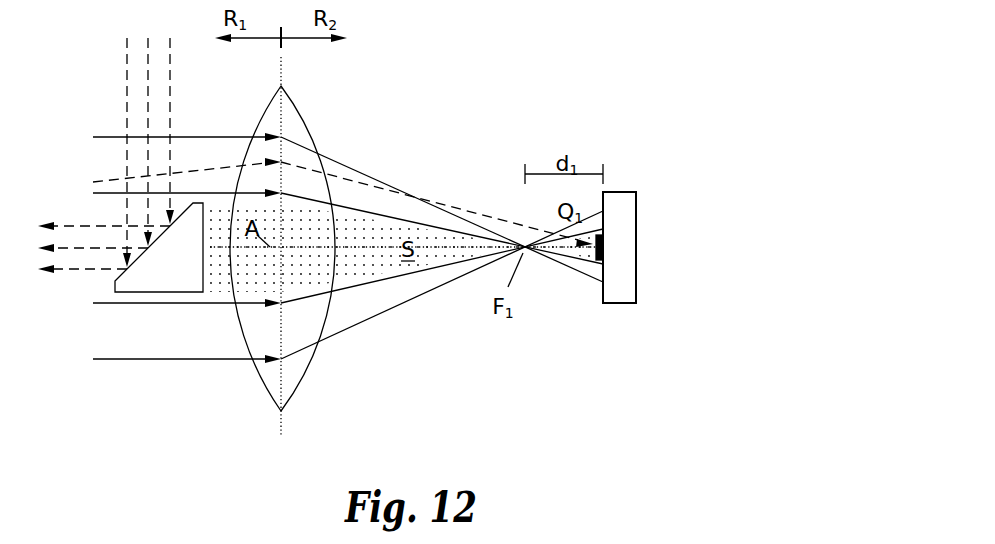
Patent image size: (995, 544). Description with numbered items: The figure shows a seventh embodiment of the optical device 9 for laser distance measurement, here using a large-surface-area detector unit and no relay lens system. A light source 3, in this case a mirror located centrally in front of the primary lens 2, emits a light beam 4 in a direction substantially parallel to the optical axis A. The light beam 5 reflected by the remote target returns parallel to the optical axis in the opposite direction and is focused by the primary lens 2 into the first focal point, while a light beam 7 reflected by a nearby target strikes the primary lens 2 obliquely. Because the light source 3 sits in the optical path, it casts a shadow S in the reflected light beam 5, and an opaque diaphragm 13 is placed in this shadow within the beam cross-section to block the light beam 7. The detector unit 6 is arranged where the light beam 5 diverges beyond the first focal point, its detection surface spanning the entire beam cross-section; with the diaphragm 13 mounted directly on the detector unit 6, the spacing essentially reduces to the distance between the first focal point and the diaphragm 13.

The primary lens 2 is at (295, 120).
The light source 3 is at (168, 275).
The emitted light beam 4 is at (80, 225).
The light beam reflected by the remote target 5 is at (202, 360).
The detector unit 6 is at (625, 192).
The light beam reflected by the nearby target 7 is at (463, 210).
The optical device 9 is at (574, 37).
The diaphragm 13 is at (593, 253).